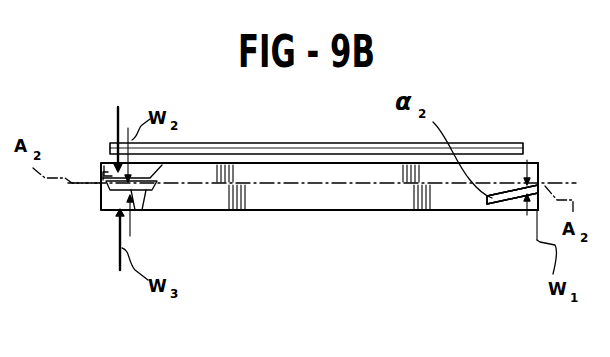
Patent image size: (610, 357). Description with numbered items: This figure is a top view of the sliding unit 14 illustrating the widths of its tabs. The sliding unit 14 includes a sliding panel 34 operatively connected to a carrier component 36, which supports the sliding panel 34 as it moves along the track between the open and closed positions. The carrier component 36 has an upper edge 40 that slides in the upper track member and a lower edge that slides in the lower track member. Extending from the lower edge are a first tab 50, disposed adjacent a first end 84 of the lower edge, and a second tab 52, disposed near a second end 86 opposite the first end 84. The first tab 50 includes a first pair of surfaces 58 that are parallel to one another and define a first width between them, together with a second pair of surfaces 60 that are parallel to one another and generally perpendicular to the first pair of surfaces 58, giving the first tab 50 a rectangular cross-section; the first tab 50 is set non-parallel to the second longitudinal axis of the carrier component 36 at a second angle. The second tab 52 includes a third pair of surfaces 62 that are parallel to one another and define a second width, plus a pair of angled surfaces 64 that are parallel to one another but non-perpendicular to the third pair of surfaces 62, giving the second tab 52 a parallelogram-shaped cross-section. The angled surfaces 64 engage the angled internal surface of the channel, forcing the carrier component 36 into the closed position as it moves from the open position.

The sliding unit 14 is at (337, 232).
The sliding panel 34 is at (313, 143).
The carrier component 36 is at (381, 210).
The upper edge 40 is at (302, 210).
The first tab 50 is at (514, 210).
The second tab 52 is at (117, 178).
The first pair of surfaces 58 is at (507, 190).
The second pair of surfaces 60 is at (540, 188).
The third pair of surfaces 62 is at (150, 182).
The angled surfaces 64 is at (164, 178).
The first end 84 is at (540, 186).
The second end 86 is at (112, 178).